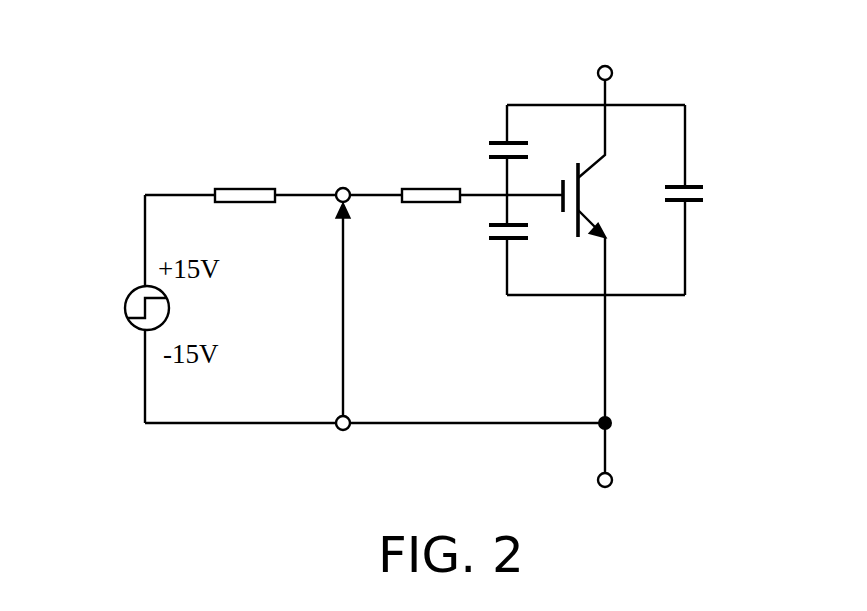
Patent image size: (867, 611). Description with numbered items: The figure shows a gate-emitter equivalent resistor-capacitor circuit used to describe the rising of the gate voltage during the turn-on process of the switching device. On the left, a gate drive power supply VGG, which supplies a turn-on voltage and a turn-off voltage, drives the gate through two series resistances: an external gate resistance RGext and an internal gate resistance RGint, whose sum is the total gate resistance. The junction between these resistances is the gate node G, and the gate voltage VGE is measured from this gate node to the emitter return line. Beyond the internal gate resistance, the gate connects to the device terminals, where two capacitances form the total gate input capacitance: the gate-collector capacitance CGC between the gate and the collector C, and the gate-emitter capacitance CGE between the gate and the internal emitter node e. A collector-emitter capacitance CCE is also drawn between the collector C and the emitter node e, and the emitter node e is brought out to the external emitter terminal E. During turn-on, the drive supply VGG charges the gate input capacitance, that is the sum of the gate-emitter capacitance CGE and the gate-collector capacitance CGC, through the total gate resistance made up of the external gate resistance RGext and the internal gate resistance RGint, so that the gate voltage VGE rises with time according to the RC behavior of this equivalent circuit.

The gate drive power supply voltage VGG is at (120, 308).
The external gate resistance RGext is at (248, 178).
The internal gate resistance RGint is at (424, 178).
The gate G is at (343, 178).
The gate voltage VGE is at (321, 316).
The gate-collector capacitance CGC is at (491, 129).
The gate-emitter capacitance CGE is at (491, 255).
The collector-emitter capacitance CCE is at (706, 178).
The collector C is at (595, 73).
The emitter node e is at (614, 423).
The emitter E is at (597, 467).